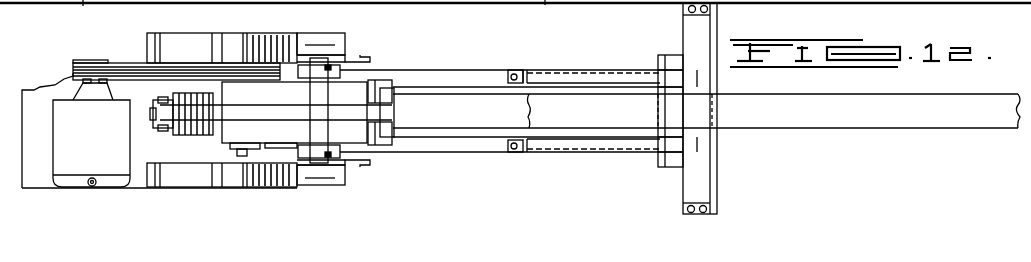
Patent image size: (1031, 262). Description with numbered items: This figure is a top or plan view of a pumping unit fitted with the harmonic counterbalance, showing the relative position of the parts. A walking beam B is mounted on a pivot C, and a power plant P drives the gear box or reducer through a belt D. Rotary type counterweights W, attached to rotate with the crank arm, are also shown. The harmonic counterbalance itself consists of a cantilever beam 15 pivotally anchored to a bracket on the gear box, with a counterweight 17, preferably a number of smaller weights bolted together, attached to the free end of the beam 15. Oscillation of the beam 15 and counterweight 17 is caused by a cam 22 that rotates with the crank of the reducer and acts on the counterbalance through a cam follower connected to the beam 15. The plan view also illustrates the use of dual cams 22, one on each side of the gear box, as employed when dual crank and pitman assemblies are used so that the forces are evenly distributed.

The power plant P is at (70, 165).
The belt D is at (134, 71).
The rotary type counterweights W is at (228, 37).
The cam 22 is at (360, 58).
The cantilever beam 15 is at (288, 115).
The counterweight 17 is at (187, 123).
The walking beam B is at (597, 107).
The pivot C is at (678, 83).